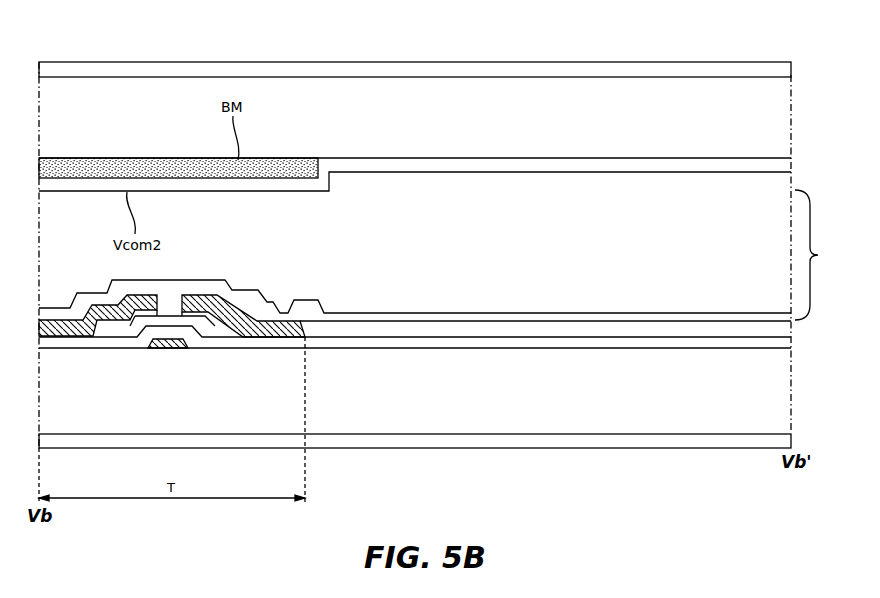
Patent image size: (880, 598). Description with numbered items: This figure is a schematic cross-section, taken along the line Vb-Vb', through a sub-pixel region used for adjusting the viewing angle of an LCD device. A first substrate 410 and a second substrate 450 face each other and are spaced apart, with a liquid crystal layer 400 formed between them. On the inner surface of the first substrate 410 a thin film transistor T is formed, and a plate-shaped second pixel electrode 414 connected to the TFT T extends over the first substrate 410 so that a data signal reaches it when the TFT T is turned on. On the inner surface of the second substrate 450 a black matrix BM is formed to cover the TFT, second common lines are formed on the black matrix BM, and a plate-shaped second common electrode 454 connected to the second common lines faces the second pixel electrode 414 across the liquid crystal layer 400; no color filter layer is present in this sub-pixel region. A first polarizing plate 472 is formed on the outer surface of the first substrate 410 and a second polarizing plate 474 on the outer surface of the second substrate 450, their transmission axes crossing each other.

The second polarizing plate 474 is at (395, 67).
The second substrate 450 is at (772, 119).
The second common electrode 454 is at (386, 166).
The liquid crystal layer 400 is at (825, 255).
The second pixel electrode 414 is at (542, 312).
The first substrate 410 is at (769, 396).
The first polarizing plate 472 is at (418, 449).